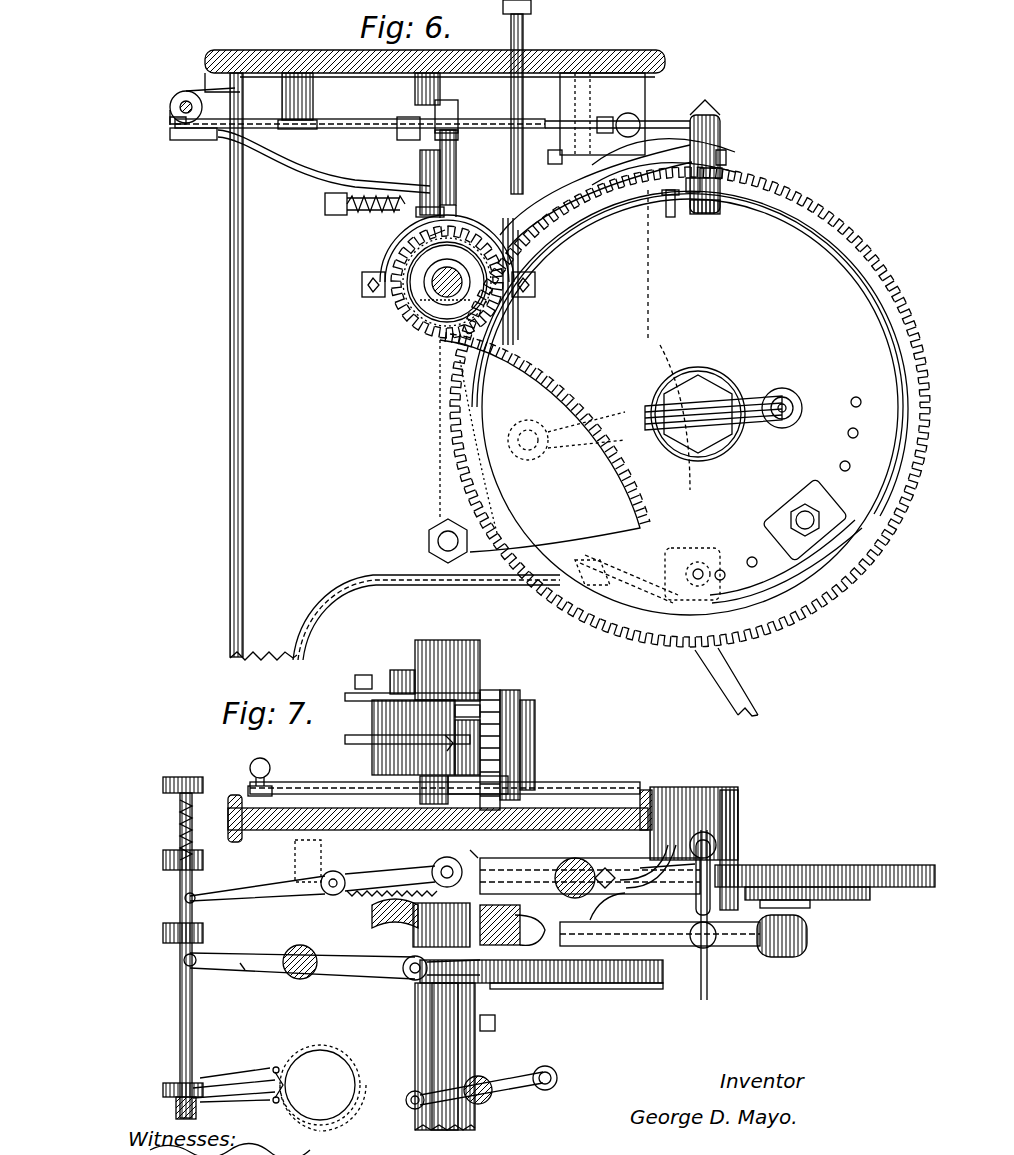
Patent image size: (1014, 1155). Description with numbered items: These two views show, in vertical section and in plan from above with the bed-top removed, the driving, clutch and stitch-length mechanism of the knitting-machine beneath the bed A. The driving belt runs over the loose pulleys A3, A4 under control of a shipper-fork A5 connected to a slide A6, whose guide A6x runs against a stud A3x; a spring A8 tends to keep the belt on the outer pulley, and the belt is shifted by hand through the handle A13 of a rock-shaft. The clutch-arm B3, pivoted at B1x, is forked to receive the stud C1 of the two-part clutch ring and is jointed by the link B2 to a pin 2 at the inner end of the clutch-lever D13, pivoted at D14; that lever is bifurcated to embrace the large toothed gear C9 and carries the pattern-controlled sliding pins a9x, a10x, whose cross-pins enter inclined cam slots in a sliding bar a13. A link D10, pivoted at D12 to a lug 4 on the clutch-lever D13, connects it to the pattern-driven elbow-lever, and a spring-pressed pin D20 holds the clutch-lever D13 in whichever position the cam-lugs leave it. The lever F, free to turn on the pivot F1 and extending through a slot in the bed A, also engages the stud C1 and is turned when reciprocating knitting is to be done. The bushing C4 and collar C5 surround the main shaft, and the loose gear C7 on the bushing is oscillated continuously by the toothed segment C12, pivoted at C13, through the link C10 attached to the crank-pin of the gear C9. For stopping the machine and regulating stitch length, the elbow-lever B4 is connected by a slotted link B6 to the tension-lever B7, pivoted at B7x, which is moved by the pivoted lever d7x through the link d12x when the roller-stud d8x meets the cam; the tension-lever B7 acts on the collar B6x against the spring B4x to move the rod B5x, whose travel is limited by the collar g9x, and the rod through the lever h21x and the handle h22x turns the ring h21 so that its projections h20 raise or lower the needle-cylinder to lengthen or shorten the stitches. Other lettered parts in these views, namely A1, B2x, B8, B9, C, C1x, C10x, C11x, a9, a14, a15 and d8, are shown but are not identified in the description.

In FIG. 6, the bed A is at (618, 54).
In FIG. 6, the frame A1 is at (382, 366).
In FIG. 7, the frame A1 is at (615, 796).
In FIG. 7, the loose pulley A3 is at (380, 748).
In FIG. 7, the loose pulley A4 is at (375, 712).
In FIG. 7, the shipper-fork A5 is at (360, 682).
In FIG. 7, the slide A6 is at (520, 712).
In FIG. 7, the guide A6x is at (508, 700).
In FIG. 7, the stud A3x is at (495, 745).
In FIG. 7, the spring A8 is at (505, 780).
In FIG. 7, the handle A13 is at (250, 768).
In FIG. 6, the pivot B1x is at (415, 92).
In FIG. 7, the pivot B1x is at (413, 925).
In FIG. 6, the link B2 is at (457, 150).
In FIG. 7, the link B2 is at (490, 870).
In FIG. 6, the post B2x is at (282, 100).
In FIG. 6, the clutch-arm B3 is at (388, 230).
In FIG. 7, the clutch-arm B3 is at (372, 910).
In FIG. 7, the elbow-lever B4 is at (520, 812).
In FIG. 7, the spring B4x is at (180, 824).
In FIG. 6, the rod B5x is at (170, 120).
In FIG. 7, the rod B5x is at (192, 1040).
In FIG. 7, the slotted link B6 is at (505, 982).
In FIG. 7, the collar B6x is at (250, 950).
In FIG. 6, the tension-lever B7 is at (352, 114).
In FIG. 7, the tension-lever B7 is at (243, 970).
In FIG. 7, the pivot B7x is at (302, 979).
In FIG. 6, the lever B8 is at (272, 150).
In FIG. 7, the lever B8 is at (250, 882).
In FIG. 6, the pivot eye B9 is at (420, 180).
In FIG. 7, the pivot eye B9 is at (342, 878).
In FIG. 6, the pinion C is at (436, 276).
In FIG. 6, the stud C1 is at (362, 286).
In FIG. 6, the bracket pin C1x is at (440, 300).
In FIG. 6, the bushing C4 is at (430, 318).
In FIG. 6, the collar C5 is at (510, 308).
In FIG. 6, the loose gear C7 is at (519, 330).
In FIG. 7, the loose gear C7 is at (403, 974).
In FIG. 6, the large toothed gear C9 is at (838, 225).
In FIG. 7, the large toothed gear C9 is at (840, 868).
In FIG. 6, the link C10 is at (760, 392).
In FIG. 7, the link C10 is at (608, 942).
In FIG. 6, the clamp C10x is at (808, 578).
In FIG. 7, the clamp C10x is at (840, 900).
In FIG. 6, the slot C11x is at (630, 528).
In FIG. 6, the toothed segment C12 is at (440, 400).
In FIG. 7, the toothed segment C12 is at (634, 983).
In FIG. 6, the pivot C13 is at (438, 541).
In FIG. 6, the link D10 is at (650, 210).
In FIG. 6, the pivot D12 is at (712, 213).
In FIG. 6, the clutch-lever D13 is at (640, 130).
In FIG. 7, the clutch-lever D13 is at (740, 858).
In FIG. 6, the pivot D14 is at (575, 185).
In FIG. 7, the pivot D14 is at (590, 866).
In FIG. 6, the spring-pressed pin D20 is at (325, 210).
In FIG. 7, the spring-pressed pin D20 is at (304, 861).
In FIG. 6, the lever F is at (524, 40).
In FIG. 7, the lever F is at (548, 925).
In FIG. 6, the pivot F1 is at (560, 150).
In FIG. 6, the clamp a9 is at (702, 106).
In FIG. 7, the sliding pin a9x is at (712, 935).
In FIG. 7, the sliding pin a10x is at (720, 838).
In FIG. 6, the sliding bar a13 is at (726, 158).
In FIG. 7, the sliding bar a13 is at (712, 838).
In FIG. 6, the eye a14 is at (722, 174).
In FIG. 6, the eye a15 is at (700, 185).
In FIG. 6, the pivoted lever d7x is at (437, 136).
In FIG. 7, the pivoted lever d7x is at (508, 1078).
In FIG. 6, the block d8 is at (552, 150).
In FIG. 7, the roller-stud d8x is at (557, 1078).
In FIG. 6, the link d12x is at (400, 130).
In FIG. 7, the link d12x is at (415, 1032).
In FIG. 7, the collar g9x is at (164, 784).
In FIG. 7, the projections h20 is at (320, 1046).
In FIG. 7, the ring h21 is at (320, 1085).
In FIG. 6, the lever h21x is at (195, 140).
In FIG. 7, the lever h21x is at (230, 1085).
In FIG. 6, the handle h22x is at (182, 92).
In FIG. 7, the handle h22x is at (240, 1098).
In FIG. 6, the pin 2 is at (426, 232).
In FIG. 7, the pin 2 is at (476, 845).
In FIG. 6, the lug 4 is at (674, 214).